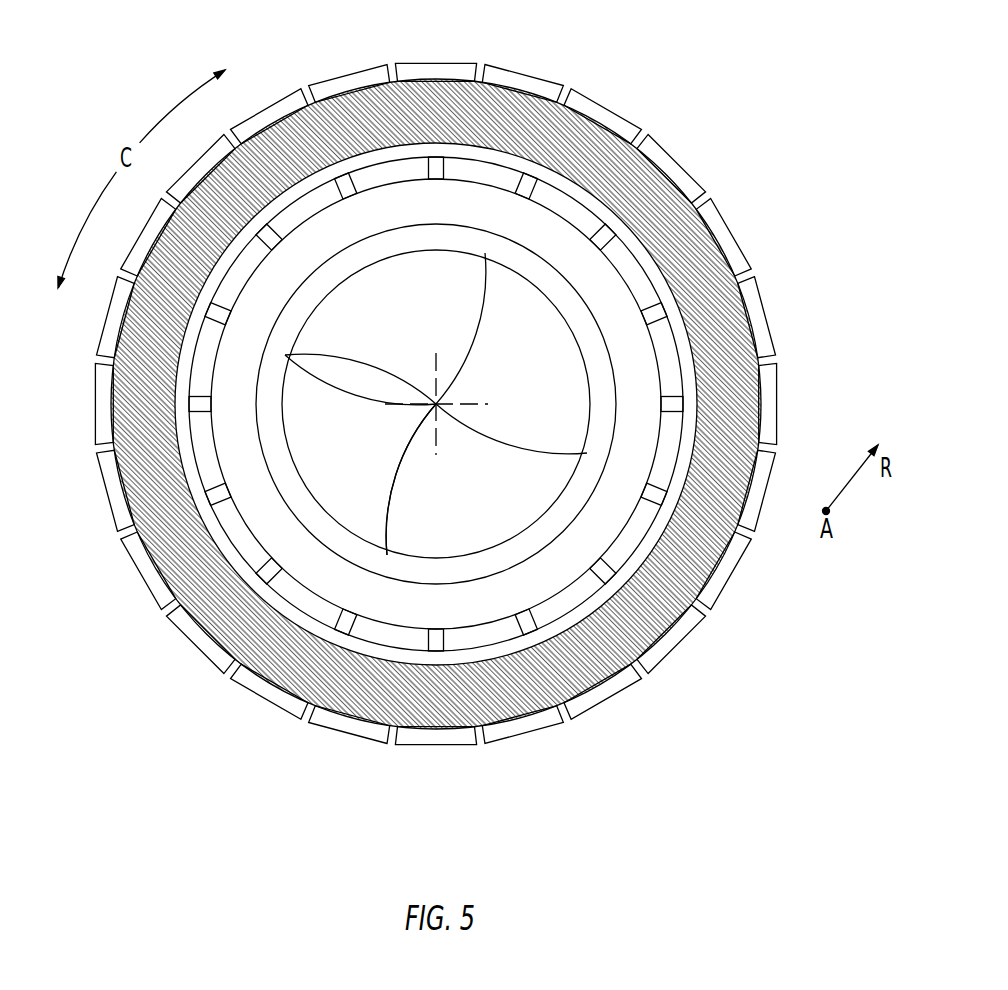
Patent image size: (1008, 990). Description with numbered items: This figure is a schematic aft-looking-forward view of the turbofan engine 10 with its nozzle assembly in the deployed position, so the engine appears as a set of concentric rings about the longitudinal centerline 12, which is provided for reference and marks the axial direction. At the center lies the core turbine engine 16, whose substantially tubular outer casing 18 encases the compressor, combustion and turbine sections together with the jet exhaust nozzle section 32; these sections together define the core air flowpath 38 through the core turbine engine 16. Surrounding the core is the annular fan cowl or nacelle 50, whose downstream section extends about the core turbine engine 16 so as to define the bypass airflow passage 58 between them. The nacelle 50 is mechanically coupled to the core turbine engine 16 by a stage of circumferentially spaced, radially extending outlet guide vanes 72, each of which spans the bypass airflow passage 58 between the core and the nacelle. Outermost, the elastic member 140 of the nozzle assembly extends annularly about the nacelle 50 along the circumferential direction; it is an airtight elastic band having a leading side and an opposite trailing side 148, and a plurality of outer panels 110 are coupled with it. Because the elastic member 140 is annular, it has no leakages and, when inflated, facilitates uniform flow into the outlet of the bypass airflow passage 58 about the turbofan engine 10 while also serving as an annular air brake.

The turbofan engine 10 is at (765, 70).
The longitudinal centerline 12 is at (400, 404).
The core turbine engine 16 is at (480, 590).
The outer casing 18 is at (622, 342).
The jet exhaust nozzle section 32 is at (320, 465).
The core air flowpath 38 is at (540, 542).
The nacelle 50 is at (657, 277).
The bypass airflow passage 58 is at (307, 200).
The outlet guide vanes 72 is at (443, 165).
The outer panels 110 is at (433, 60).
The elastic member 140 is at (593, 158).
The trailing side 148 is at (648, 200).